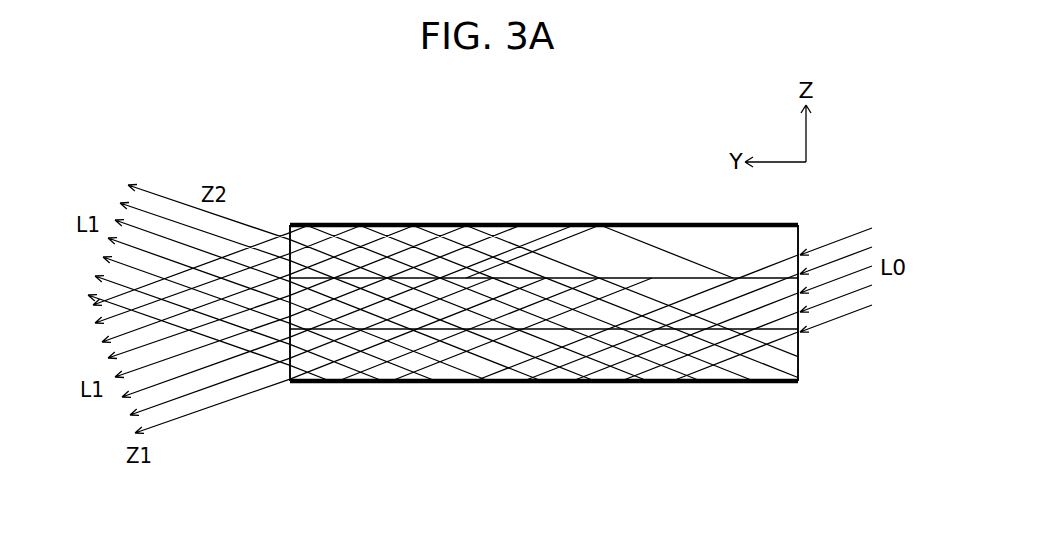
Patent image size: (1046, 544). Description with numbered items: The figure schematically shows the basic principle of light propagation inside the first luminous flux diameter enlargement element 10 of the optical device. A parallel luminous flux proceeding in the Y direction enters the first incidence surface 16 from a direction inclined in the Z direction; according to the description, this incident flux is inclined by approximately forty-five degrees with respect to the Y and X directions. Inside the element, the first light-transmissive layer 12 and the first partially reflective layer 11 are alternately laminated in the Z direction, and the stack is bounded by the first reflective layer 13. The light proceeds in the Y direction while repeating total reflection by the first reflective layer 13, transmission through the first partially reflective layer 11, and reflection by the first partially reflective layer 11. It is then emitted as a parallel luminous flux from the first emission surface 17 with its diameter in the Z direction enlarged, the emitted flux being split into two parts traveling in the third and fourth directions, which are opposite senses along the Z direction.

The first luminous flux diameter enlargement element 10 is at (505, 200).
The first partially reflective layer 11 is at (606, 327).
The first light-transmissive layer 12 is at (448, 347).
The first reflective layer 13 is at (548, 223).
The first incidence surface 16 is at (800, 353).
The first emission surface 17 is at (291, 360).